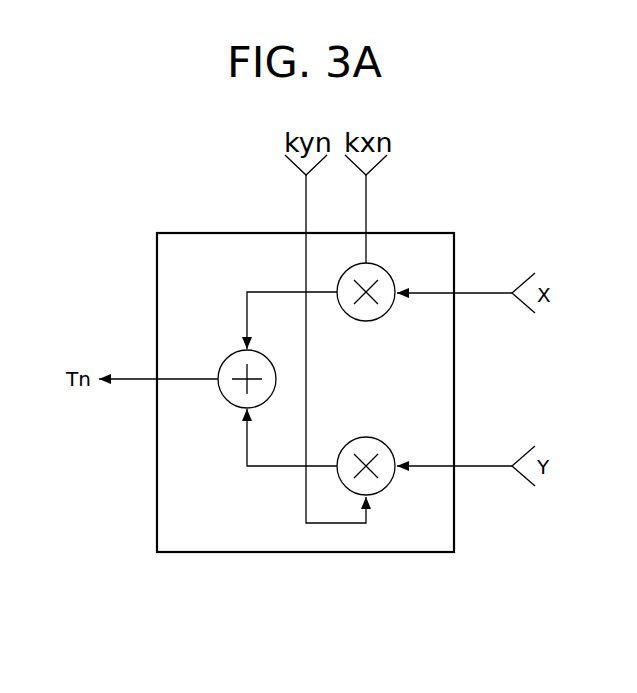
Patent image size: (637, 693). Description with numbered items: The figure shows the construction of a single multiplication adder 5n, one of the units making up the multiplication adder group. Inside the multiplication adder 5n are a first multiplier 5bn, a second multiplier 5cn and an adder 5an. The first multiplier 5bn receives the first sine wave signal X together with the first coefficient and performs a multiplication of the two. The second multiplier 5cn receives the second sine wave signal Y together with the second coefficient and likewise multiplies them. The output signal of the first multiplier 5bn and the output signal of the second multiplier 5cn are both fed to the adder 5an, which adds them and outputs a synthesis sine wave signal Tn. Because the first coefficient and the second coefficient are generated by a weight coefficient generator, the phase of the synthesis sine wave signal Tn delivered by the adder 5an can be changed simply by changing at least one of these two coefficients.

The multiplication adder 5n is at (157, 283).
The adder 5an is at (226, 359).
The first multiplier 5bn is at (384, 315).
The second multiplier 5cn is at (365, 437).